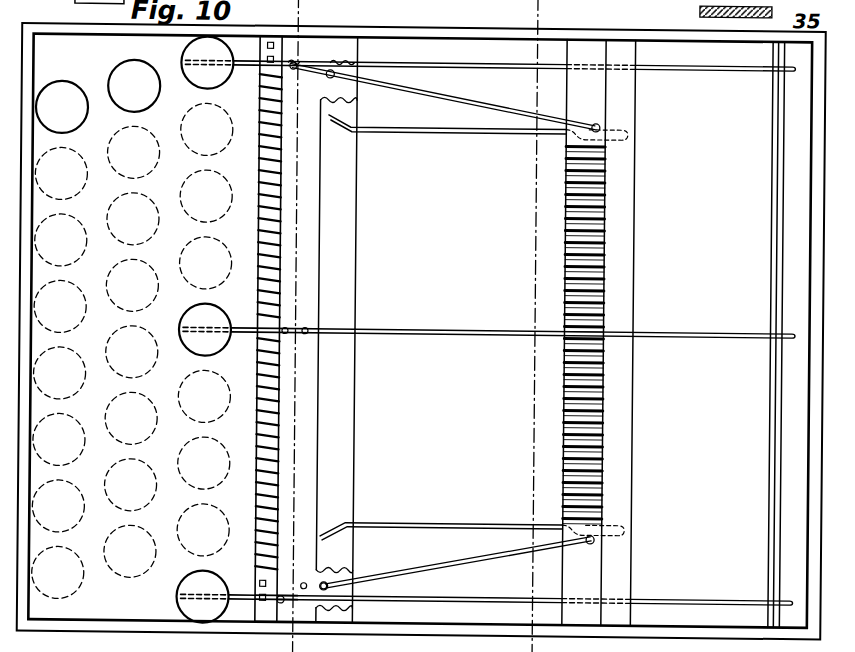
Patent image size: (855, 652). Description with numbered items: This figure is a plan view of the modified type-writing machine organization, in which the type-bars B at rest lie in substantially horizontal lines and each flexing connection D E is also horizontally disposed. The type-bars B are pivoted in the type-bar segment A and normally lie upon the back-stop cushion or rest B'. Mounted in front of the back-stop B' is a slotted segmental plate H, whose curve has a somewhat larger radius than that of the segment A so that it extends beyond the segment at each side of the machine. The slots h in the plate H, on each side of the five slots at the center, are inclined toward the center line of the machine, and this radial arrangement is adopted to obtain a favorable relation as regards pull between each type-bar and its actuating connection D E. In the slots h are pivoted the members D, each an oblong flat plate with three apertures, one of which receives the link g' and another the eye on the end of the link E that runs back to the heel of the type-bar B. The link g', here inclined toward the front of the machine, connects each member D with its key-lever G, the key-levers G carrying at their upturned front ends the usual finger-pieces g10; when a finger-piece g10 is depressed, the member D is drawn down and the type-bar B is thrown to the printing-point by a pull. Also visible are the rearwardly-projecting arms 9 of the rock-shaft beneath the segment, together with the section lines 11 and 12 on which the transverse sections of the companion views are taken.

The finger-piece g10 is at (182, 48).
The link g' is at (306, 332).
The slotted segmental plate H is at (262, 157).
The slots h is at (280, 130).
The member D is at (278, 70).
The link E is at (423, 90).
The type-bars B is at (474, 329).
The back-stop cushion or rest B' is at (338, 330).
The type-bar segment A is at (565, 217).
The key-levers G is at (492, 68).
The rearwardly-projecting arms 9 is at (771, 272).
The section line 12 12 is at (298, 326).
The section line 11 11 is at (539, 326).